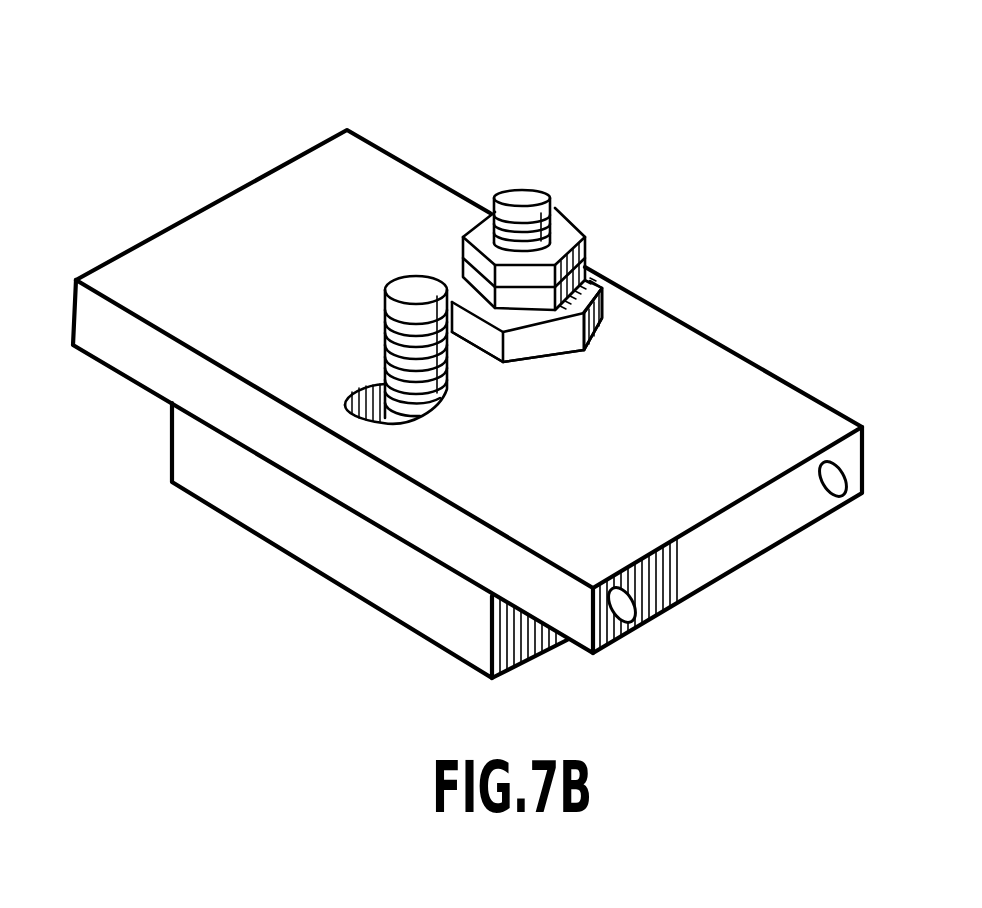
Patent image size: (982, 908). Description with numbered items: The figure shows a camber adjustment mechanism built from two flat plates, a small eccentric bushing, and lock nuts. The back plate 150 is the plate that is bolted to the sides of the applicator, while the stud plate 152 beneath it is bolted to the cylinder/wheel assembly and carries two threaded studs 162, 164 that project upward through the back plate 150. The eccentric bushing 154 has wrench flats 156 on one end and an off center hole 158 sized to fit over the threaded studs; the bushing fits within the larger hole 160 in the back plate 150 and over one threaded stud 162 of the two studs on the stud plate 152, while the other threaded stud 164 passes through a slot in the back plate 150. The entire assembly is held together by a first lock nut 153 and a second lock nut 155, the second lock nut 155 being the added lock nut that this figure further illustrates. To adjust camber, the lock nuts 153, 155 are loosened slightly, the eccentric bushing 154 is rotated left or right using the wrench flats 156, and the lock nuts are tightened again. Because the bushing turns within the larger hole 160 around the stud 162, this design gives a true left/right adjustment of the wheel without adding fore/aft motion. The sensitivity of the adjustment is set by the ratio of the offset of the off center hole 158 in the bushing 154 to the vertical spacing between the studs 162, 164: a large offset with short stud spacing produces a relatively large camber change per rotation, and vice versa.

The back plate 150 is at (215, 202).
The stud plate 152 is at (218, 510).
The first lock nut 153 is at (585, 262).
The eccentric bushing 154 is at (605, 300).
The second lock nut 155 is at (588, 263).
The wrench flats 156 is at (562, 338).
The off center hole 158 is at (587, 262).
The larger hole 160 is at (502, 362).
The threaded stud 162 is at (535, 190).
The threaded stud 164 is at (423, 283).